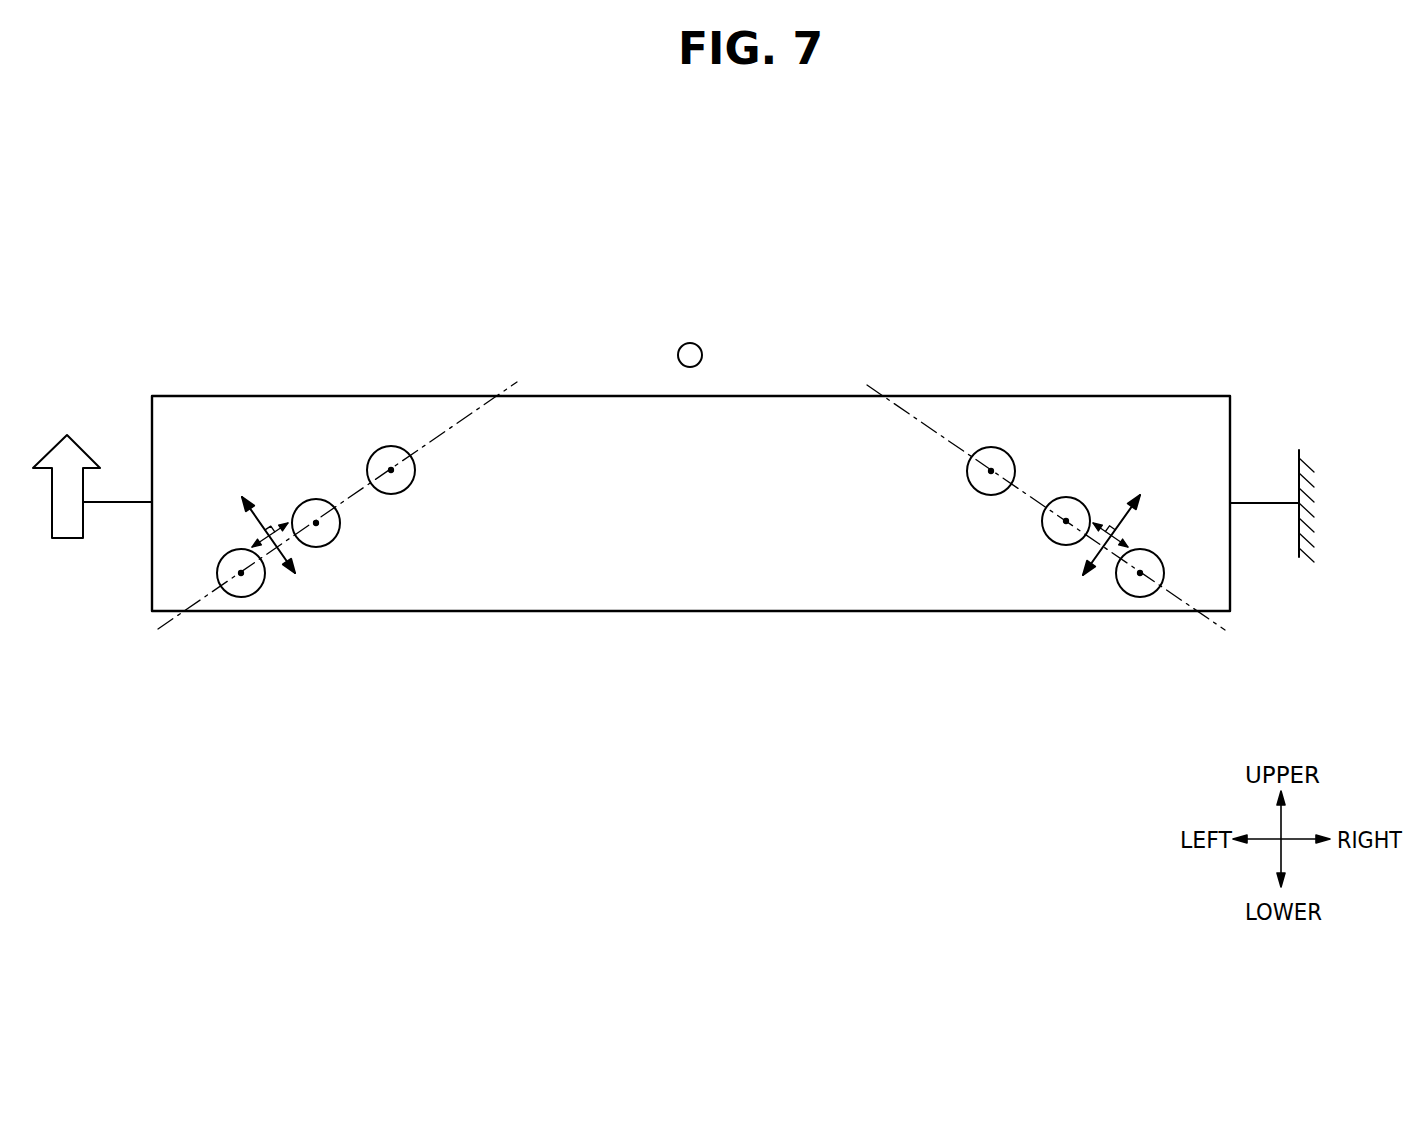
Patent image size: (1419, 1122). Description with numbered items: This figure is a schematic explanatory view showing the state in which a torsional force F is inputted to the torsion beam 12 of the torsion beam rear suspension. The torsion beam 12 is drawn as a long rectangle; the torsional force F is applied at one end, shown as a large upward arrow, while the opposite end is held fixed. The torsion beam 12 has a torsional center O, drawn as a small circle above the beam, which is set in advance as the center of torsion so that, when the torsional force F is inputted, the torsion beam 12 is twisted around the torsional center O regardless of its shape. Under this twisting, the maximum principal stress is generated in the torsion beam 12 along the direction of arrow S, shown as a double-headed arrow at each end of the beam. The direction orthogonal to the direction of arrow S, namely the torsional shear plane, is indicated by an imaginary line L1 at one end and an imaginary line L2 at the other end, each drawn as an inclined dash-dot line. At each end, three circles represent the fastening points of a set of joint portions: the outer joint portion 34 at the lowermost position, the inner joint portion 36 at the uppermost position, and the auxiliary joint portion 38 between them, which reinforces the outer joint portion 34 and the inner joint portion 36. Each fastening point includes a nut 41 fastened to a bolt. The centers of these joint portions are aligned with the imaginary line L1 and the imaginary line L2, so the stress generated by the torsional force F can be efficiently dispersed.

The torsion beam 12 is at (1150, 378).
The outer joint portion 34 is at (256, 584).
The inner joint portion 36 is at (394, 463).
The auxiliary joint portion 38 is at (322, 532).
The nut 41 is at (298, 500).
The maximum principal stress direction arrow S is at (255, 505).
The torsional force F is at (92, 508).
The torsional center O is at (700, 343).
The imaginary line L1 is at (202, 602).
The imaginary line L2 is at (1178, 602).